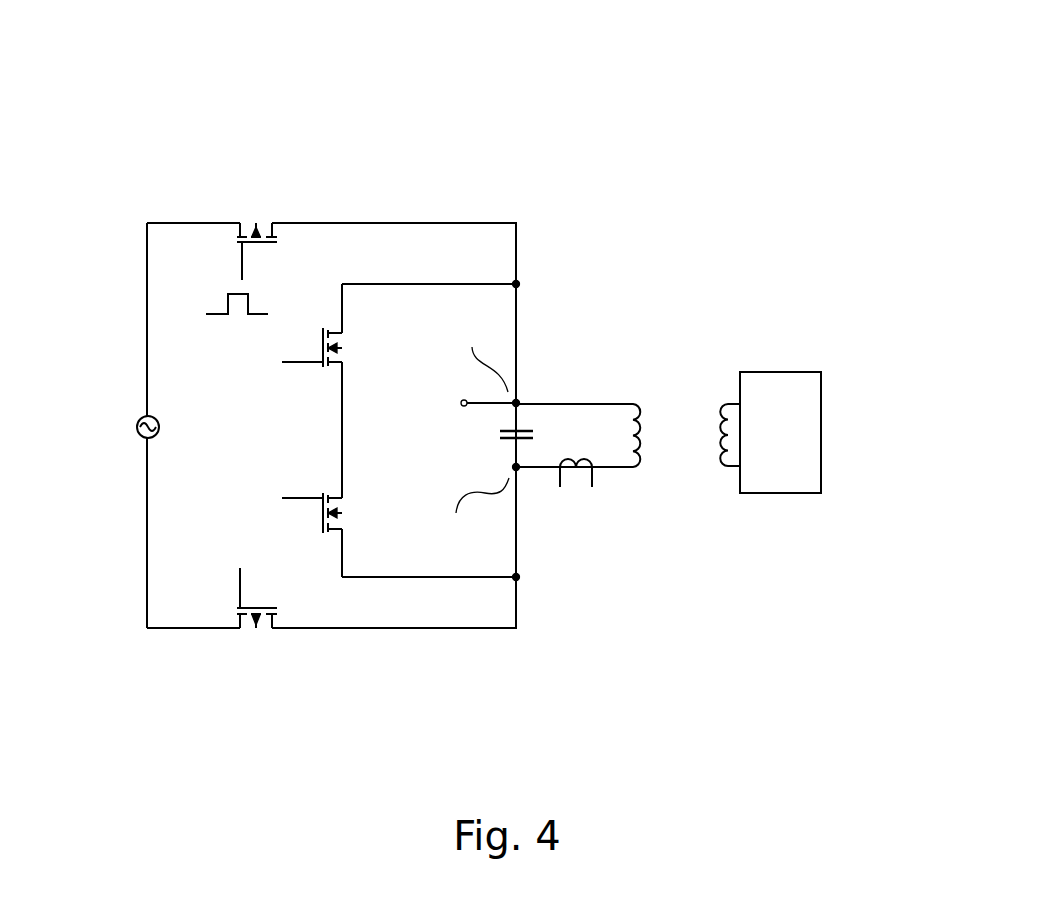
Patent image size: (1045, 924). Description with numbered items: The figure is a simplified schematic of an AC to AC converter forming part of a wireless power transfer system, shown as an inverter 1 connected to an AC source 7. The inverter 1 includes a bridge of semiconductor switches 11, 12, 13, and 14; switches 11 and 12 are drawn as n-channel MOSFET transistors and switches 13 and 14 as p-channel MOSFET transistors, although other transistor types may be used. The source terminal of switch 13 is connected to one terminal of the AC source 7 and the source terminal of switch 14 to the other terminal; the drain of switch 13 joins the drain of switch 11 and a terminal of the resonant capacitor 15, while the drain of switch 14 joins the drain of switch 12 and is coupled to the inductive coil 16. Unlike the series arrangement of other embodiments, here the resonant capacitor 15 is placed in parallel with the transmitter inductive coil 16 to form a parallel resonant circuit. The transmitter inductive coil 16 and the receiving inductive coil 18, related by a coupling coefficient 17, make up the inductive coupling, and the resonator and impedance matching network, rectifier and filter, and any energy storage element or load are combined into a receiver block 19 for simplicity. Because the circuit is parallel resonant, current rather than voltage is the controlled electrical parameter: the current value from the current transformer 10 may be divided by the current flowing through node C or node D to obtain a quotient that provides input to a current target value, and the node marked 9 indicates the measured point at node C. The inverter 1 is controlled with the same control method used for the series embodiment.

The inverter 1 is at (445, 72).
The AC source 7 is at (137, 445).
The measurement node (voltage V at node C/D) 9 is at (462, 387).
The current transformer 10 is at (587, 500).
The semiconductor switch 11 is at (321, 315).
The semiconductor switch 12 is at (313, 513).
The semiconductor switch 13 is at (235, 238).
The semiconductor switch 14 is at (283, 616).
The resonant capacitor 15 is at (528, 423).
The transmitter inductive coil 16 is at (634, 401).
The coupling coefficient 17 is at (680, 452).
The receiving inductive coil 18 is at (728, 397).
The receiver block 19 is at (795, 435).